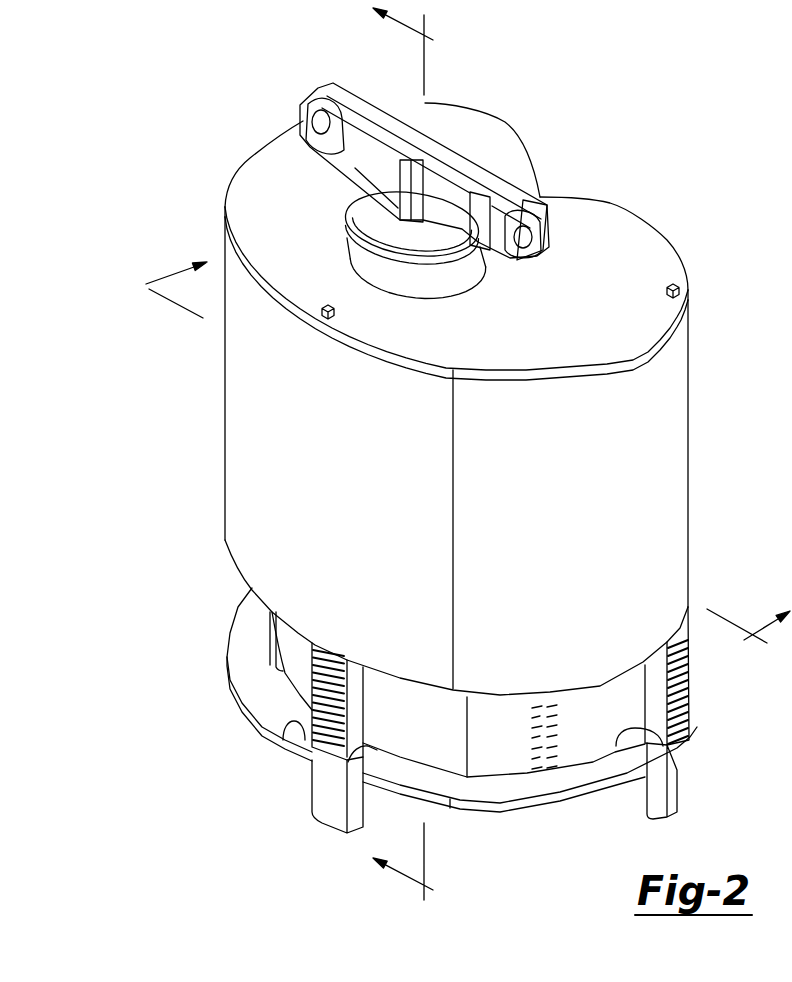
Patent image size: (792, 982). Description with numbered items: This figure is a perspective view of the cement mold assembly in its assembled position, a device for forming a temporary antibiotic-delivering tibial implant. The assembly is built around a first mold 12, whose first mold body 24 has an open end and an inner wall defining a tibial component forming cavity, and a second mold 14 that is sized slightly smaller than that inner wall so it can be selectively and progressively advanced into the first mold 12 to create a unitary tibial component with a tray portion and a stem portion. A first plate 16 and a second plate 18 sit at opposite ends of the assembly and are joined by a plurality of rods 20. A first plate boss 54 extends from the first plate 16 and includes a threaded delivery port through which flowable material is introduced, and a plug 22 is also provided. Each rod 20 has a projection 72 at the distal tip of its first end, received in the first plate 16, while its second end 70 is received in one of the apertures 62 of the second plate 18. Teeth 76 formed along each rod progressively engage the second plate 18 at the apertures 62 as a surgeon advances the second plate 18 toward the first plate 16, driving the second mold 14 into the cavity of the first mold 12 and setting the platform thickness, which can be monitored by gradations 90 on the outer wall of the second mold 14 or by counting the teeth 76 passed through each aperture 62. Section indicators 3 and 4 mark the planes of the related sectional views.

The first mold 12 is at (256, 393).
The second mold 14 is at (294, 647).
The first plate 16 is at (622, 235).
The second plate 18 is at (257, 675).
The rods 20 is at (353, 709).
The plug 22 is at (437, 152).
The first mold body 24 is at (260, 480).
The first plate boss 54 is at (463, 265).
The apertures 62 is at (310, 735).
The second ends 70 is at (322, 800).
The projection 72 is at (325, 306).
The teeth 76 is at (318, 668).
The gradations 90 is at (548, 705).
The section line 3- 3 is at (456, 463).
The section line 4- 4 is at (415, 460).